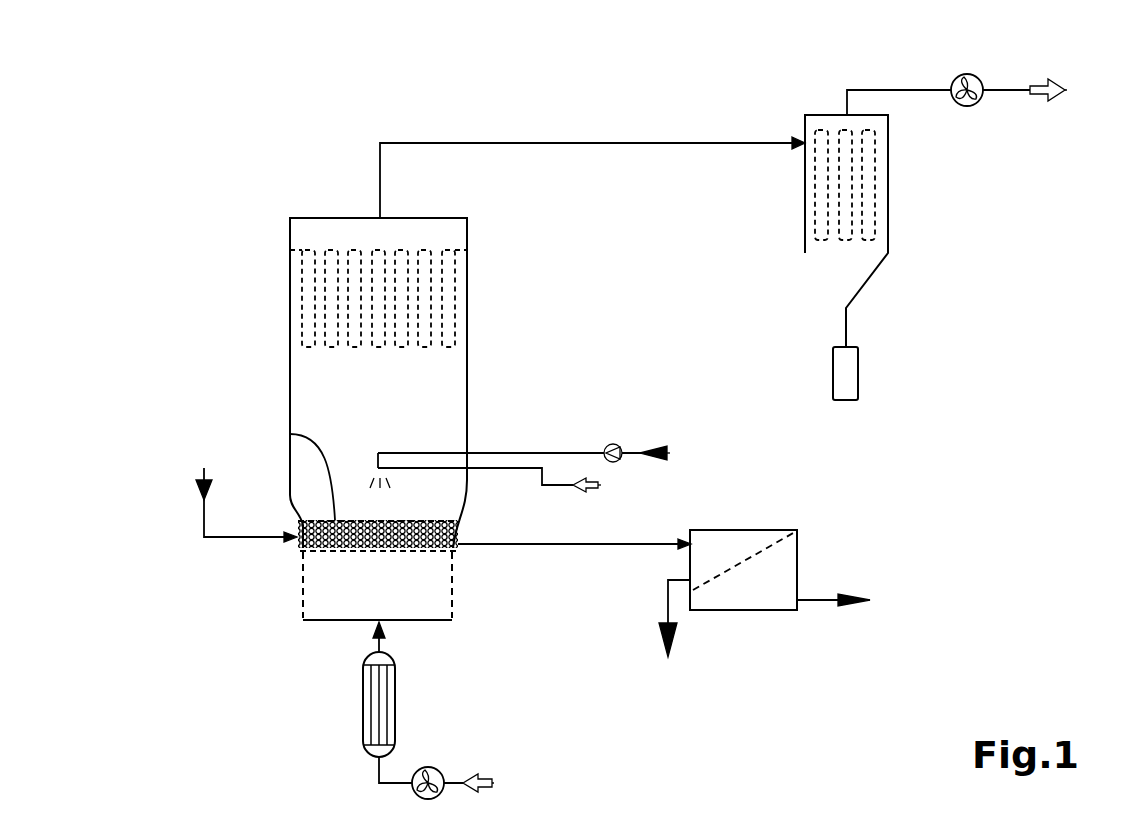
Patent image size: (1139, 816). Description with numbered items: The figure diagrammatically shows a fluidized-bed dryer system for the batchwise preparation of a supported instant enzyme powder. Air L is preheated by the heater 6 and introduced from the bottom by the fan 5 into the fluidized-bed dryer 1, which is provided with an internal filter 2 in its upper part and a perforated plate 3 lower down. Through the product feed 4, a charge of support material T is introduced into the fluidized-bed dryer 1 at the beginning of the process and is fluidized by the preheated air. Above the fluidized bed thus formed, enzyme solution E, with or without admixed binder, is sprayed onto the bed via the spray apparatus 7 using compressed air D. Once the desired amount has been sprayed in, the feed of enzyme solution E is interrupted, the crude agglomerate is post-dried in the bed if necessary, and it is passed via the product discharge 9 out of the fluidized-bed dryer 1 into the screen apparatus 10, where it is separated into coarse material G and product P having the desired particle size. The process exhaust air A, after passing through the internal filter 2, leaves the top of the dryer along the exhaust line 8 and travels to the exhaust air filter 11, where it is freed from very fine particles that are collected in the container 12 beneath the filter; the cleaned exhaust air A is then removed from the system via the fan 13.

The fluidized-bed dryer 1 is at (290, 261).
The internal filter 2 is at (455, 327).
The perforated plate 3 is at (345, 560).
The product feed 4 is at (203, 520).
The fan 5 is at (430, 768).
The heater 6 is at (383, 700).
The spray apparatus 7 is at (487, 452).
The exhaust air line 8 is at (503, 145).
The product discharge 9 is at (495, 545).
The screen apparatus 10 is at (735, 588).
The exhaust air filter 11 is at (882, 197).
The container 12 is at (847, 380).
The fan 13 is at (970, 68).
The support material T is at (290, 435).
The enzyme solution E is at (687, 458).
The compressed air D is at (614, 486).
The process exhaust air A is at (1086, 91).
The product P is at (885, 601).
The coarse material G is at (668, 660).
The air L is at (510, 784).